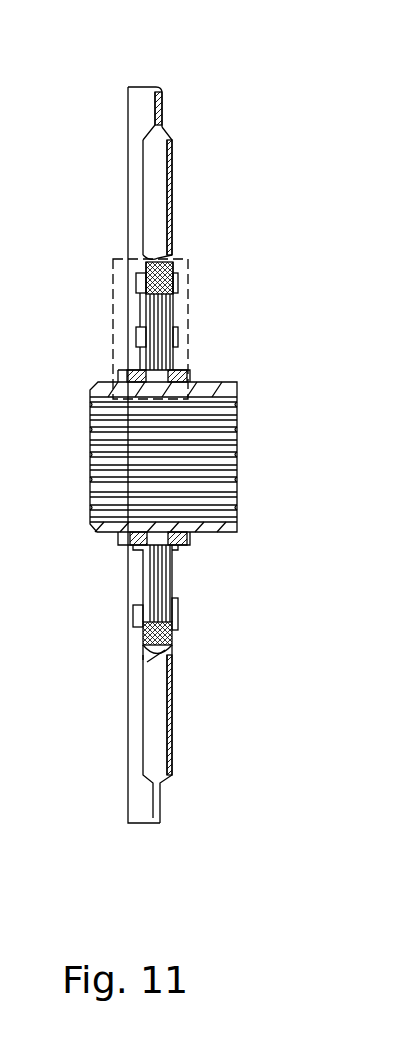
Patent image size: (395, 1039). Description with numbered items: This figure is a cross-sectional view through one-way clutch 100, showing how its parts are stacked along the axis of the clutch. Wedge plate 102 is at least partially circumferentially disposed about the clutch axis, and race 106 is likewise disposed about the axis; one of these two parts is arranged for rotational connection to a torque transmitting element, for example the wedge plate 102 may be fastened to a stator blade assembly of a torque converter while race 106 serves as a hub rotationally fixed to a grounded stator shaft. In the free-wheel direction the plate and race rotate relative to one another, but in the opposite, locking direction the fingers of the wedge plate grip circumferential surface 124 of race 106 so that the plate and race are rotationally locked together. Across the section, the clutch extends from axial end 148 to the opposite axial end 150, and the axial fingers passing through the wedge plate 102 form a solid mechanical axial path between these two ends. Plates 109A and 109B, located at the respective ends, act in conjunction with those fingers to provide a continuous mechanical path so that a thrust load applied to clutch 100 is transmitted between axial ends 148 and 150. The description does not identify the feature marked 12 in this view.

The one-way clutch 100 is at (275, 145).
The plate 109A is at (150, 113).
The plate 109B is at (143, 87).
The axial end 148 is at (118, 235).
The cable 12 is at (112, 330).
The wedge plate 102 is at (185, 282).
The race 106 is at (237, 377).
The circumferential surface 124 is at (220, 532).
The axial end 150 is at (188, 676).